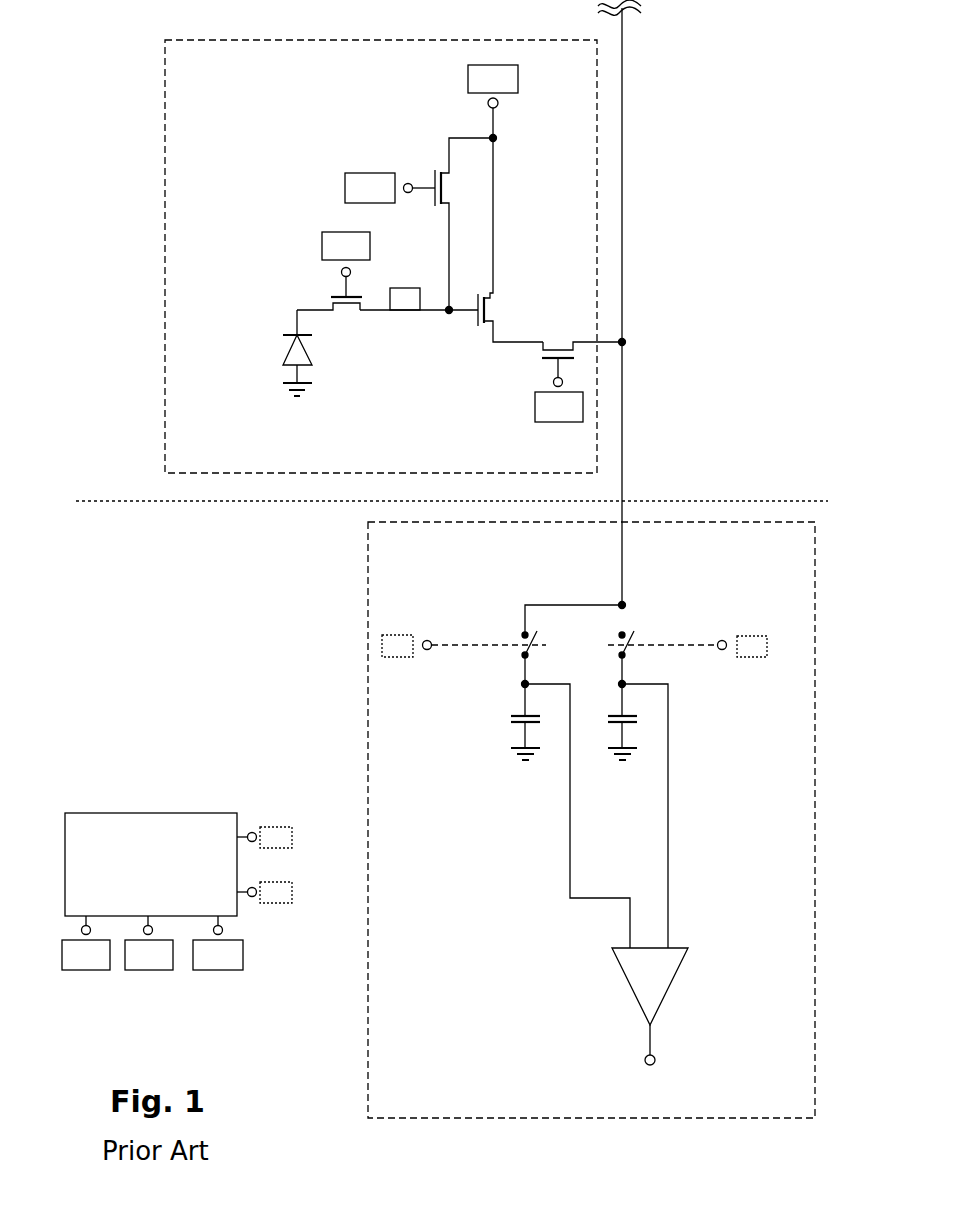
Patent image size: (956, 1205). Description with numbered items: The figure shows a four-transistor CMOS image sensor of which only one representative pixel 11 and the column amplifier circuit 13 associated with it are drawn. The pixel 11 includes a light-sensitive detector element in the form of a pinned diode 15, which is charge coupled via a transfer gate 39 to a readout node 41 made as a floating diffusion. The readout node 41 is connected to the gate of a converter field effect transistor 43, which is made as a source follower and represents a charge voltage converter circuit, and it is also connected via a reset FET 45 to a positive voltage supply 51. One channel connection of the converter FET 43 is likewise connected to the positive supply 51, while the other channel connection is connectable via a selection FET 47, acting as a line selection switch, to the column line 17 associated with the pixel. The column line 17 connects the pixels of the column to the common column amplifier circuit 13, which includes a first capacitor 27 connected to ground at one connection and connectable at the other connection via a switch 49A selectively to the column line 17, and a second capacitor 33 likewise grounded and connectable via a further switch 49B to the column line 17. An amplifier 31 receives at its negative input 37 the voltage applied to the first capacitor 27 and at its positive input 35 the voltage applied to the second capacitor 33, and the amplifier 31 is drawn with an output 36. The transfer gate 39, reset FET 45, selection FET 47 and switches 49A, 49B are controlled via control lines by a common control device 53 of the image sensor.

The pixel 11 is at (162, 238).
The column amplifier circuit 13 is at (360, 600).
The pinned diode 15 is at (282, 350).
The column line 17 is at (627, 238).
The first capacitor 27 is at (500, 720).
The amplifier 31 is at (680, 985).
The second capacitor 33 is at (650, 721).
The positive input 35 is at (680, 937).
The amplifier output 36 is at (635, 1058).
The negative input 37 is at (617, 938).
The transfer gate 39 is at (332, 291).
The readout node 41 is at (405, 321).
The converter field effect transistor 43 is at (491, 306).
The reset FET 45 is at (435, 165).
The selection FET 47 is at (538, 360).
The switch 49A is at (505, 625).
The further switch 49B is at (645, 624).
The positive voltage supply 51 is at (500, 106).
The common control device 53 is at (160, 805).